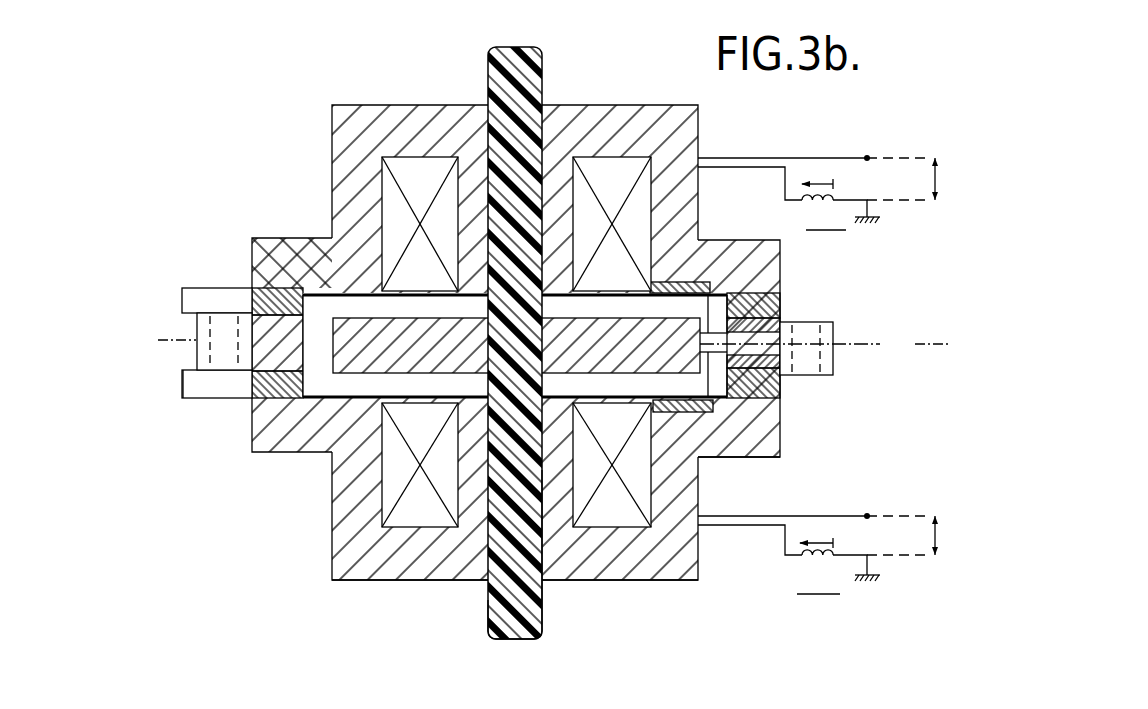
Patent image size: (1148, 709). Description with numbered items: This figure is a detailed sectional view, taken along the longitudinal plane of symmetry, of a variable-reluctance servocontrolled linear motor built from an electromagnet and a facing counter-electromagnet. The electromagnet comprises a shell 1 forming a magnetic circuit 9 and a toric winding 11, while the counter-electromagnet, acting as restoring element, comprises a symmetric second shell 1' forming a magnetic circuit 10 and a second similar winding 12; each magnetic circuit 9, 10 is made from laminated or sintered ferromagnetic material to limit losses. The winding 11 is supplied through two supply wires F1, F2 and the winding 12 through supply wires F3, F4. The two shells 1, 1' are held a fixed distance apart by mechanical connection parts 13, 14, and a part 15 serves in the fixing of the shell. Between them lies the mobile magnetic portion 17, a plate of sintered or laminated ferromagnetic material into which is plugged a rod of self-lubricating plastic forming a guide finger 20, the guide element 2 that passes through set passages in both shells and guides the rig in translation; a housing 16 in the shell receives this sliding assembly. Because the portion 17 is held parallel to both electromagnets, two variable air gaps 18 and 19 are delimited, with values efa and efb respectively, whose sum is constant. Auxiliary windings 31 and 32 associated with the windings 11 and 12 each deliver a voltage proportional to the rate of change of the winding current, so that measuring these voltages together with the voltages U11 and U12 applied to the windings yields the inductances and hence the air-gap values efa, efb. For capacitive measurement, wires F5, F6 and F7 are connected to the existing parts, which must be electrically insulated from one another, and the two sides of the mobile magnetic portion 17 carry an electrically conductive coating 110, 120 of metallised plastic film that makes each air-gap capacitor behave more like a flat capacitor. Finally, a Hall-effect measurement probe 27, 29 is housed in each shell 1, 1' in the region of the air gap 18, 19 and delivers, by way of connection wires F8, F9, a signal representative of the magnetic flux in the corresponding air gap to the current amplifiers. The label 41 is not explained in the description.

The shell 1 is at (515, 314).
The second shell 1' is at (515, 594).
The guide element 2 is at (500, 615).
The magnetic circuit 9 is at (392, 195).
The magnetic circuit 10 is at (413, 513).
The toric winding 11 is at (362, 197).
The second winding 12 is at (353, 538).
The mechanical connection part 13 is at (252, 288).
The mechanical connection part 14 is at (250, 392).
The fixing part 15 is at (200, 347).
The housing 16 is at (542, 567).
The mobile magnetic portion 17 is at (503, 443).
The air gap 18 is at (367, 308).
The air gap 19 is at (255, 452).
The guide finger 20 is at (528, 65).
The Hall-effect measurement probe 27 is at (712, 284).
The Hall-effect measurement probe 29 is at (683, 408).
The auxiliary winding 31 is at (818, 188).
The auxiliary winding 32 is at (818, 548).
The electrically conductive coating 110 is at (262, 237).
The electrically conductive coating 120 is at (277, 382).
The supply wire F1 is at (812, 146).
The supply wire F2 is at (750, 183).
The supply wire F3 is at (812, 504).
The supply wire F4 is at (750, 540).
The connection wire F5 is at (780, 262).
The connection wire F6 is at (780, 435).
The connection wire F7 is at (805, 348).
The connection wire F8 is at (790, 341).
The connection wire F9 is at (790, 348).
The voltage U11 is at (958, 179).
The voltage U12 is at (958, 535).
The air-gap value efa is at (183, 288).
The air-gap value efb is at (166, 384).
The dimension 41 is at (169, 316).